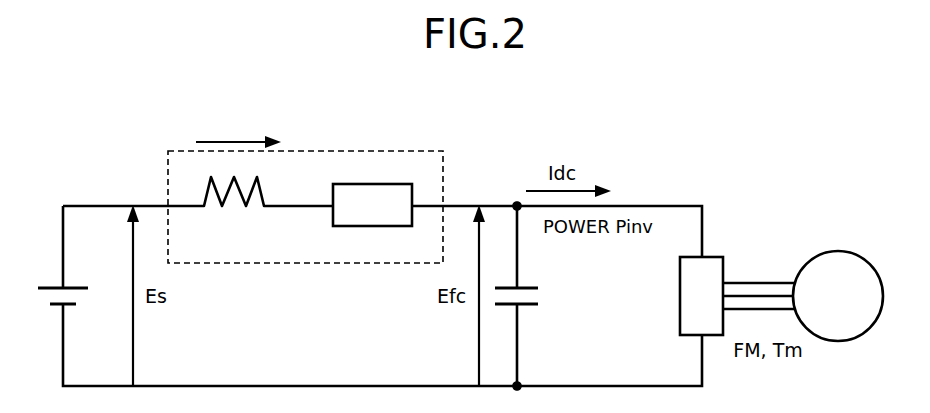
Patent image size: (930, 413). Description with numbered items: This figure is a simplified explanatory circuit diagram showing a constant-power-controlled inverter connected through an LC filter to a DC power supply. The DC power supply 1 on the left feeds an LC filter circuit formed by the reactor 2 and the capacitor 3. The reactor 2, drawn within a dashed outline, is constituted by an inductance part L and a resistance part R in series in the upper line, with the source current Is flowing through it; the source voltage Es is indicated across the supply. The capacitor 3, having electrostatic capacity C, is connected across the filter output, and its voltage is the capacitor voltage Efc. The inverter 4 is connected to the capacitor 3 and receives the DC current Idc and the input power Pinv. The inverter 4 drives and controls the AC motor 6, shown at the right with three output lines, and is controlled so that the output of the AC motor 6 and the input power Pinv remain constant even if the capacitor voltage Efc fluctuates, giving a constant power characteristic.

The DC power supply 1 is at (86, 265).
The reactor 2 is at (393, 151).
The capacitor 3 is at (536, 265).
The inverter 4 is at (722, 237).
The AC motor 6 is at (868, 232).